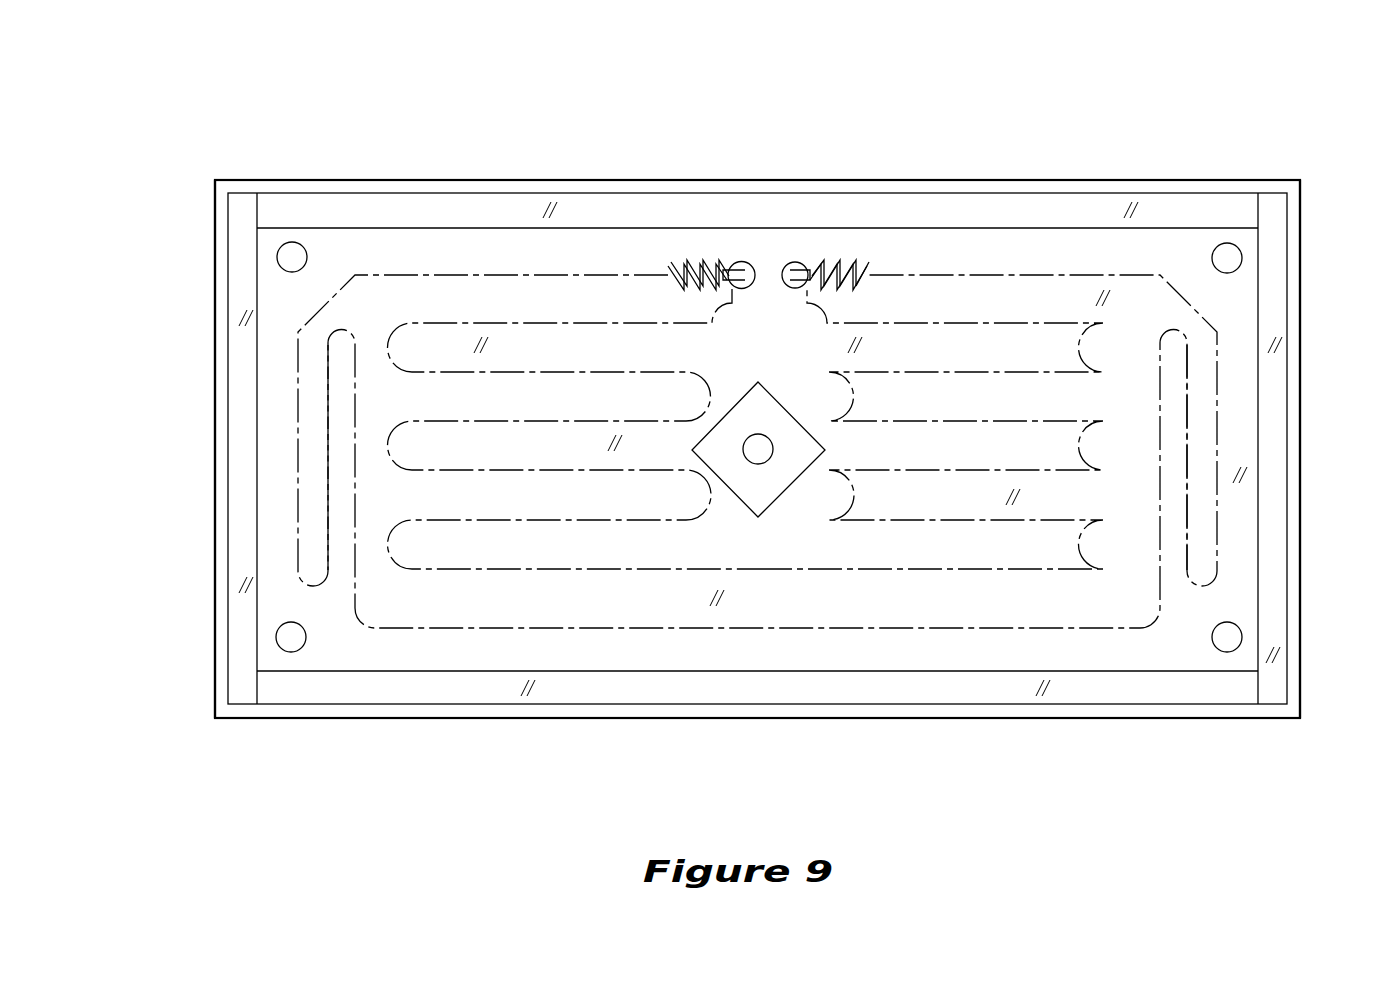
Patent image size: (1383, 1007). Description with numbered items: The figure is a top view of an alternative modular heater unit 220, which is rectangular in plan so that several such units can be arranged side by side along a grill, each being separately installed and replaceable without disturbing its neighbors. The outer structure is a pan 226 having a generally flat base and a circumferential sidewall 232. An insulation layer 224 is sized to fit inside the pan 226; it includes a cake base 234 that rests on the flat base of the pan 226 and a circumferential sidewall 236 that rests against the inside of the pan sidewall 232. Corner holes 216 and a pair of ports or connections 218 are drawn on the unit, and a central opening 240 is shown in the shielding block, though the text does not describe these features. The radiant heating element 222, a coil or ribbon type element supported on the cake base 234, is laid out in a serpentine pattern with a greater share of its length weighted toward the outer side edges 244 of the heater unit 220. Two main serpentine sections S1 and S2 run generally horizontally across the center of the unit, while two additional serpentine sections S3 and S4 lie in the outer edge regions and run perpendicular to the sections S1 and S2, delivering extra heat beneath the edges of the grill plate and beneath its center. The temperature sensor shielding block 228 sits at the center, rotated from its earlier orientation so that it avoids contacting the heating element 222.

The heater unit 220 is at (878, 141).
The pan 226 is at (1300, 180).
The circumferential sidewall 236 is at (243, 222).
The insulation layer 224 is at (599, 227).
The cake base 234 is at (508, 257).
The circumferential sidewall 232 is at (597, 719).
The mounting hole 216 is at (290, 242).
The outer side edges 244 is at (215, 413).
The heating element 222 is at (403, 275).
The serpentine section S1 is at (507, 423).
The serpentine section S2 is at (955, 423).
The serpentine section S3 is at (327, 502).
The serpentine section S4 is at (1188, 502).
The fluid ports 218 is at (795, 262).
The sensor shielding block 228 is at (758, 497).
The central hole 240 is at (758, 433).